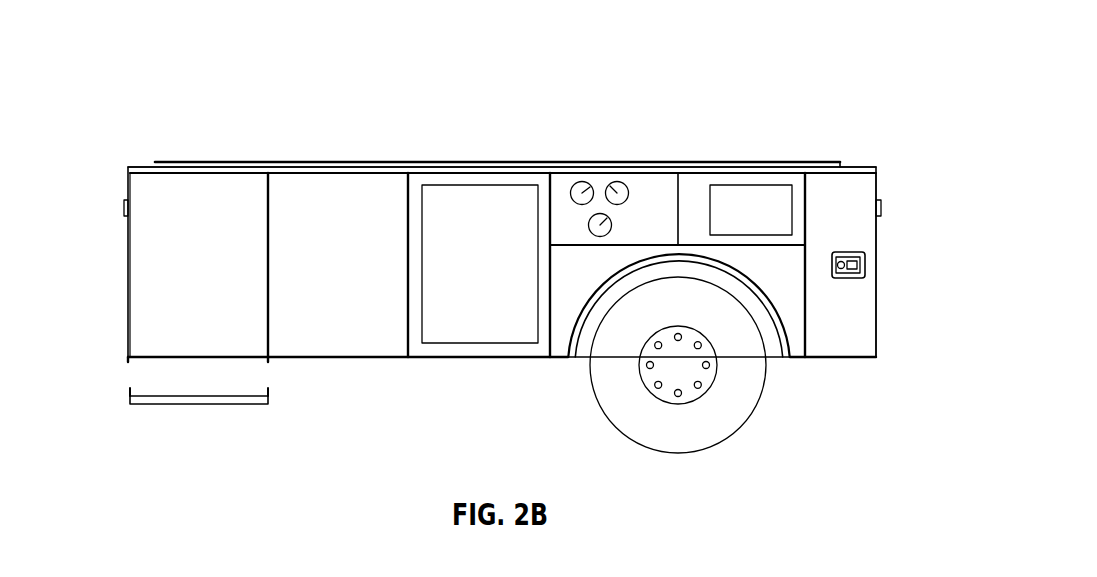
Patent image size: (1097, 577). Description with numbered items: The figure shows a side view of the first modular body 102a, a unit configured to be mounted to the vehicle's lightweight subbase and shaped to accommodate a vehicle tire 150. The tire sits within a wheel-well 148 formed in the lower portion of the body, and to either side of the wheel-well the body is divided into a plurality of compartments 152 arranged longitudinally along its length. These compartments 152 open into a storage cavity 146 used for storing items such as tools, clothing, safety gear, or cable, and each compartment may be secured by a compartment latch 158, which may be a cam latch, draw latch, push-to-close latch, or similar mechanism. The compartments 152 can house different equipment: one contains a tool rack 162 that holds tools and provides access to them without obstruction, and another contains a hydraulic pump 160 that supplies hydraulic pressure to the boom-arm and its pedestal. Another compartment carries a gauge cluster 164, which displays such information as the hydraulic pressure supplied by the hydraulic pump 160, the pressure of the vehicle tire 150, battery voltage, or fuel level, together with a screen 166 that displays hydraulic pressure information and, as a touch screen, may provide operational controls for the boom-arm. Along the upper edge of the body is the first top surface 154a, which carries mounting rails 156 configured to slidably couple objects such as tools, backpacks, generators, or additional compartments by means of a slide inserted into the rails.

The first modular body 102a is at (144, 143).
The storage cavity 146 is at (474, 200).
The wheel-well 148 is at (778, 292).
The vehicle tire 150 is at (682, 437).
The compartments 152 is at (475, 350).
The first top surface 154a is at (860, 165).
The mounting rails 156 is at (285, 163).
The compartment latch 158 is at (857, 253).
The hydraulic pump 160 is at (348, 342).
The tool rack 162 is at (148, 311).
The gauge cluster 164 is at (600, 187).
The screen 166 is at (746, 193).